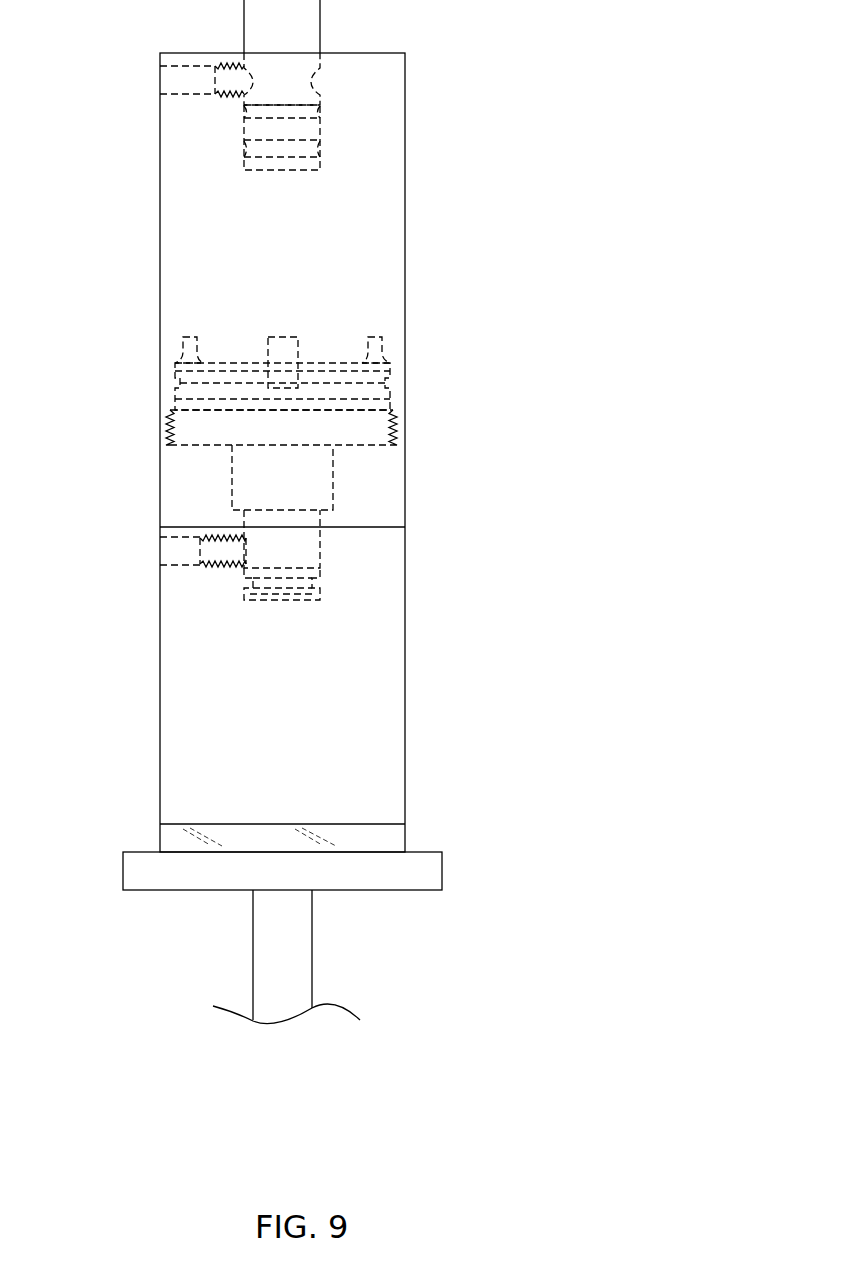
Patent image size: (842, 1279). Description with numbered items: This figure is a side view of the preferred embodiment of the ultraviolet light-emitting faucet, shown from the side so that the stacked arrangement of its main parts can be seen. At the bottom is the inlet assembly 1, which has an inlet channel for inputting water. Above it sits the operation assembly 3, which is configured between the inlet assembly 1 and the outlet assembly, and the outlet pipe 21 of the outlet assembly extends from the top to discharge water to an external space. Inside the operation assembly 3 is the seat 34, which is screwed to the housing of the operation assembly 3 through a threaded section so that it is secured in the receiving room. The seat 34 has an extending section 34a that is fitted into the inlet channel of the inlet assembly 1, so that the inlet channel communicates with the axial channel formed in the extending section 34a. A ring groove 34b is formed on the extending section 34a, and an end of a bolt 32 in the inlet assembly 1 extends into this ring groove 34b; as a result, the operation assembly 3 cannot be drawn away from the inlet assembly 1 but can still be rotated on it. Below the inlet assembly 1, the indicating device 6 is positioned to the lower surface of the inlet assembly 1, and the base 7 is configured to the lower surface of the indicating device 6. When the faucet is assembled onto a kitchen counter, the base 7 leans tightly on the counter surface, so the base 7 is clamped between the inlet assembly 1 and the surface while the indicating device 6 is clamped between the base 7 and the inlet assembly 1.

The inlet assembly 1 is at (413, 722).
The operation assembly 3 is at (413, 193).
The outlet pipe 21 is at (317, 22).
The seat 34 is at (375, 450).
The extending section 34a is at (240, 472).
The ring groove 34b is at (248, 535).
The bolt 32 is at (220, 555).
The indicating device 6 is at (410, 830).
The base 7 is at (450, 868).